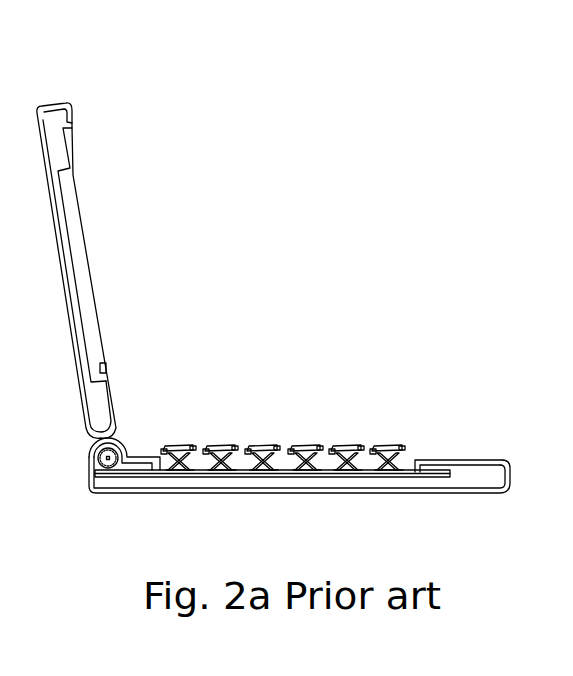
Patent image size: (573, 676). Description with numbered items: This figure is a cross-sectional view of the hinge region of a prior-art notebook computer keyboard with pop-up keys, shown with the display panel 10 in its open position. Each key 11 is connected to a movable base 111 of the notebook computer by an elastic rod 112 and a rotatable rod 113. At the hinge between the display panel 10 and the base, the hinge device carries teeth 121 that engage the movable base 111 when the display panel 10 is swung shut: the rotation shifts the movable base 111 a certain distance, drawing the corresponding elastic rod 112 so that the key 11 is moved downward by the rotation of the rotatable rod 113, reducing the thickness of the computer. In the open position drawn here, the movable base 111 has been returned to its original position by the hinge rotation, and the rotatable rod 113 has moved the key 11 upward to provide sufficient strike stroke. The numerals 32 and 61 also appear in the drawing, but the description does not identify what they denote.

The display panel 10 is at (48, 103).
The key 11 is at (307, 441).
The movable base 111 is at (410, 452).
The elastic rod 112 is at (355, 442).
The rotatable rod 113 is at (267, 473).
The teeth 121 is at (97, 458).
The hinge housing 32 is at (115, 473).
The base housing 61 is at (473, 480).